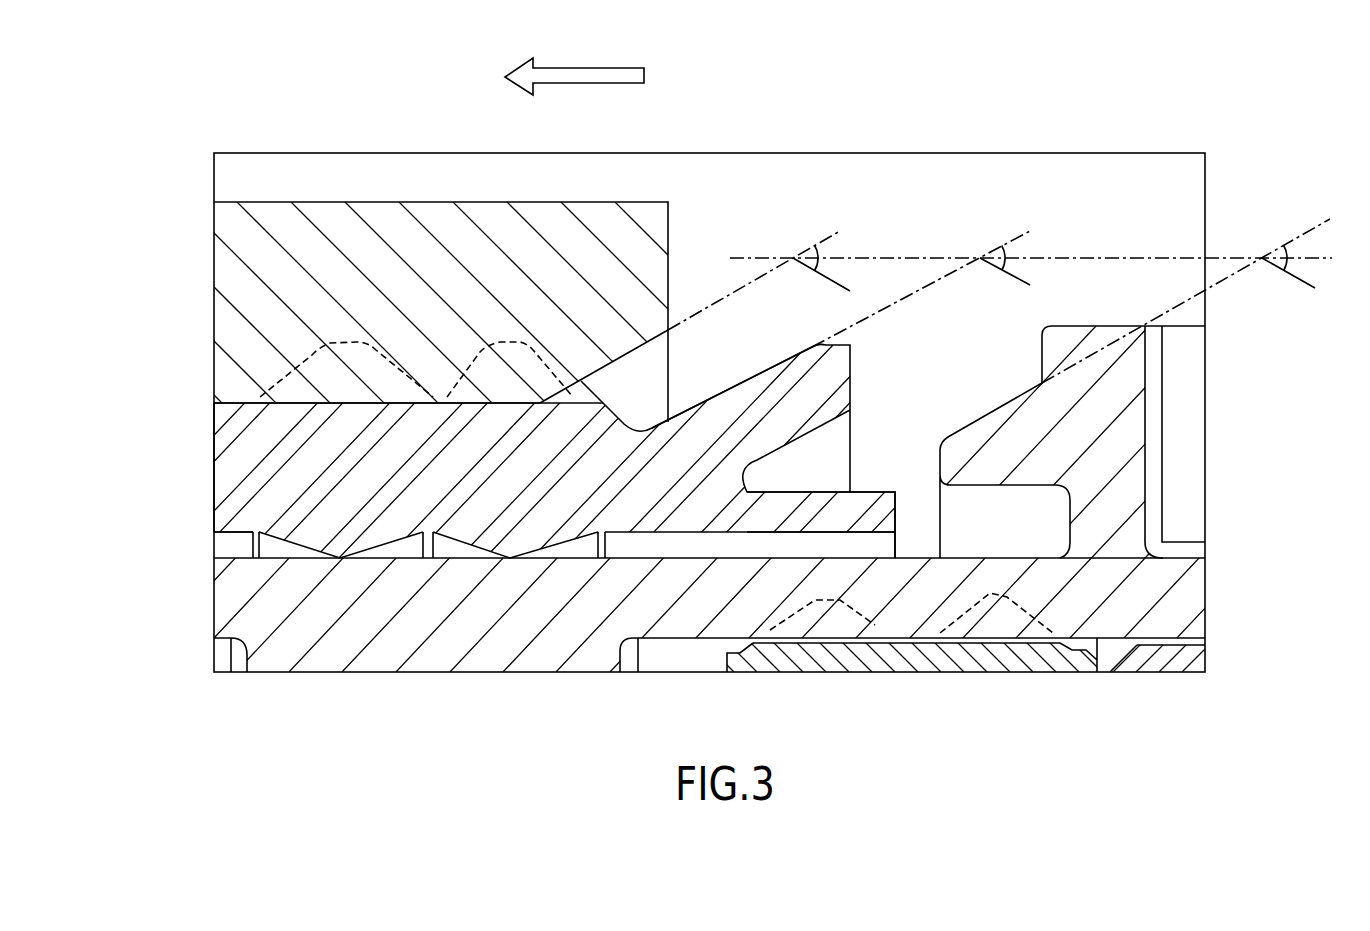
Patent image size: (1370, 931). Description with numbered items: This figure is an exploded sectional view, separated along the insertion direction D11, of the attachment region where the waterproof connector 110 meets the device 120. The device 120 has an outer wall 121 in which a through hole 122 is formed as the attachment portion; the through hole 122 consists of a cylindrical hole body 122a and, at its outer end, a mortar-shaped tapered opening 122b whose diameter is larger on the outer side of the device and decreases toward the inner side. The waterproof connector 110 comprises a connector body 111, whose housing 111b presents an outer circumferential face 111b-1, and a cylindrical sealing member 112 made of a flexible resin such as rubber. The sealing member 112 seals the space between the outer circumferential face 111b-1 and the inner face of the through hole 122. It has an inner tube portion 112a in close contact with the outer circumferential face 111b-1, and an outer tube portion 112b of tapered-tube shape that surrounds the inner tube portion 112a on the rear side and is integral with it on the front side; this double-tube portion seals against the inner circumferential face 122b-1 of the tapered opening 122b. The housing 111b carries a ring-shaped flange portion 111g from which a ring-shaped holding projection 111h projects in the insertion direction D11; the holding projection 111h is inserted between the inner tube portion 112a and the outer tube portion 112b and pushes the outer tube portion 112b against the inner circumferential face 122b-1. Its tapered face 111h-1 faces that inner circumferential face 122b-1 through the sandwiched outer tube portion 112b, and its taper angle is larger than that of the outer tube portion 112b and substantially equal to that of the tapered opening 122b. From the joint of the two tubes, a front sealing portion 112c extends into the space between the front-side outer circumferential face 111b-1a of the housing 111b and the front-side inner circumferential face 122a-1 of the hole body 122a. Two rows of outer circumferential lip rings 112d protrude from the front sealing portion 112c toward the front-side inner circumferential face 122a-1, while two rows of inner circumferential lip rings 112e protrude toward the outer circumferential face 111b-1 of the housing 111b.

The insertion direction D11 is at (616, 47).
The waterproof connector 110 is at (1216, 470).
The connector body 111 is at (685, 499).
The housing 111b is at (1216, 573).
The outer circumferential face 111b-1 is at (737, 562).
The front-side outer circumferential face 111b-1a is at (230, 556).
The flange portion 111g is at (1147, 357).
The holding projection 111h is at (685, 499).
The tapered face 111h-1 is at (997, 408).
The sealing member 112 is at (694, 537).
The inner tube portion 112a is at (850, 512).
The outer tube portion 112b is at (760, 396).
The front sealing portion 112c is at (400, 457).
The outer circumferential lip rings 112d is at (479, 350).
The inner circumferential lip rings 112e is at (460, 548).
The device 120 is at (418, 309).
The outer wall 121 is at (208, 278).
The through hole 122 is at (340, 396).
The hole body 122a is at (340, 396).
The front-side inner circumferential face 122a-1 is at (232, 403).
The tapered opening 122b is at (682, 258).
The inner circumferential face 122b-1 is at (633, 350).